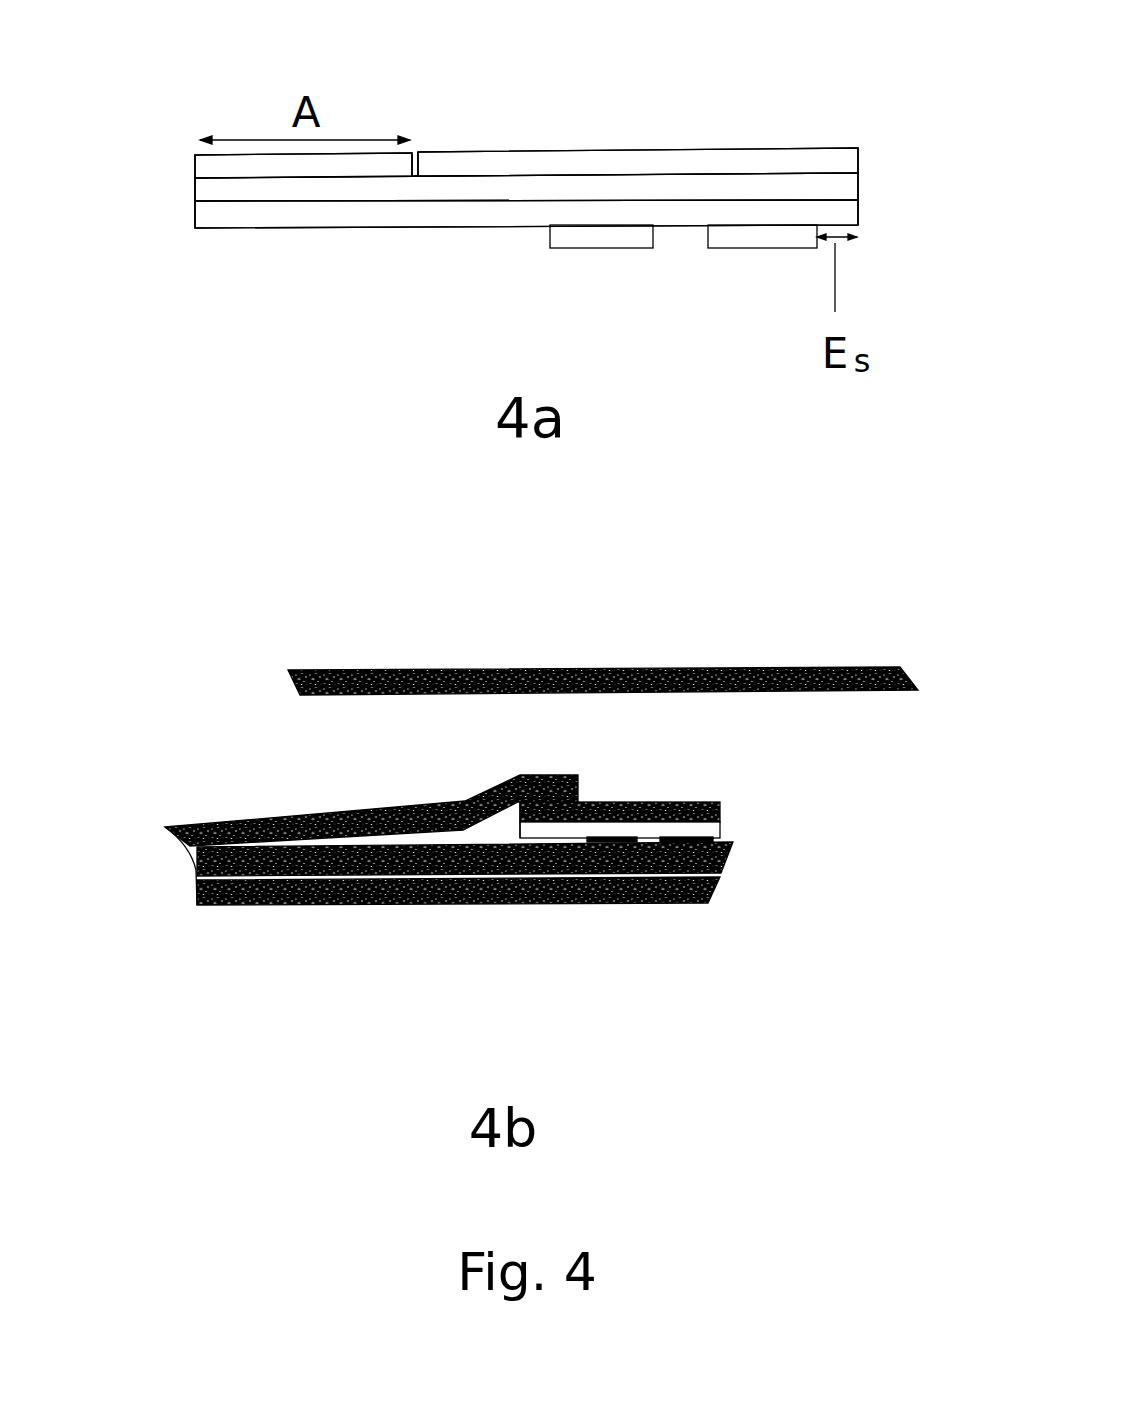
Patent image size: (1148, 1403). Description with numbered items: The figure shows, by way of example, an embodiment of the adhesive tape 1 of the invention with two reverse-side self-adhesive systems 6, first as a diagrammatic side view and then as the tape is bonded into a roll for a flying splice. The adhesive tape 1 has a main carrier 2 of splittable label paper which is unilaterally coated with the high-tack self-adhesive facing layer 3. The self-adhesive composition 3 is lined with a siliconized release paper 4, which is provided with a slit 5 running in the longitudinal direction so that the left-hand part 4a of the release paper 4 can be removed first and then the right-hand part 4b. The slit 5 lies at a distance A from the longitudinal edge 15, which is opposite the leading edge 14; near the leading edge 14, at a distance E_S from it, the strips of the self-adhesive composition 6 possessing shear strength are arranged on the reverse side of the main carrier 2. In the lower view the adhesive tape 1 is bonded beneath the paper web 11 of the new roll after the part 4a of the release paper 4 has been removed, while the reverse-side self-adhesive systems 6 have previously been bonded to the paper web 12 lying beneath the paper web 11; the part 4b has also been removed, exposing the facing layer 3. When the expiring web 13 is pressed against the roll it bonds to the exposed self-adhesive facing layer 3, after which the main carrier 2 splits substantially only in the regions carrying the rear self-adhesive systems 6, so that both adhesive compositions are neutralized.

The adhesive tape 1 is at (446, 338).
The main carrier 2 is at (393, 213).
The self-adhesive facing layer 3 is at (475, 188).
The release paper 4 is at (750, 160).
The left-hand part of the release paper 4a is at (245, 165).
The right-hand part of the release paper 4b is at (617, 162).
The slit 5 is at (422, 133).
The self-adhesive composition possessing shear strength 6 is at (603, 238).
The paper web 11 is at (285, 817).
The paper web 12 is at (270, 855).
The expiring web 13 is at (438, 672).
The leading edge 14 is at (857, 145).
The longitudinal edge 15 is at (195, 228).